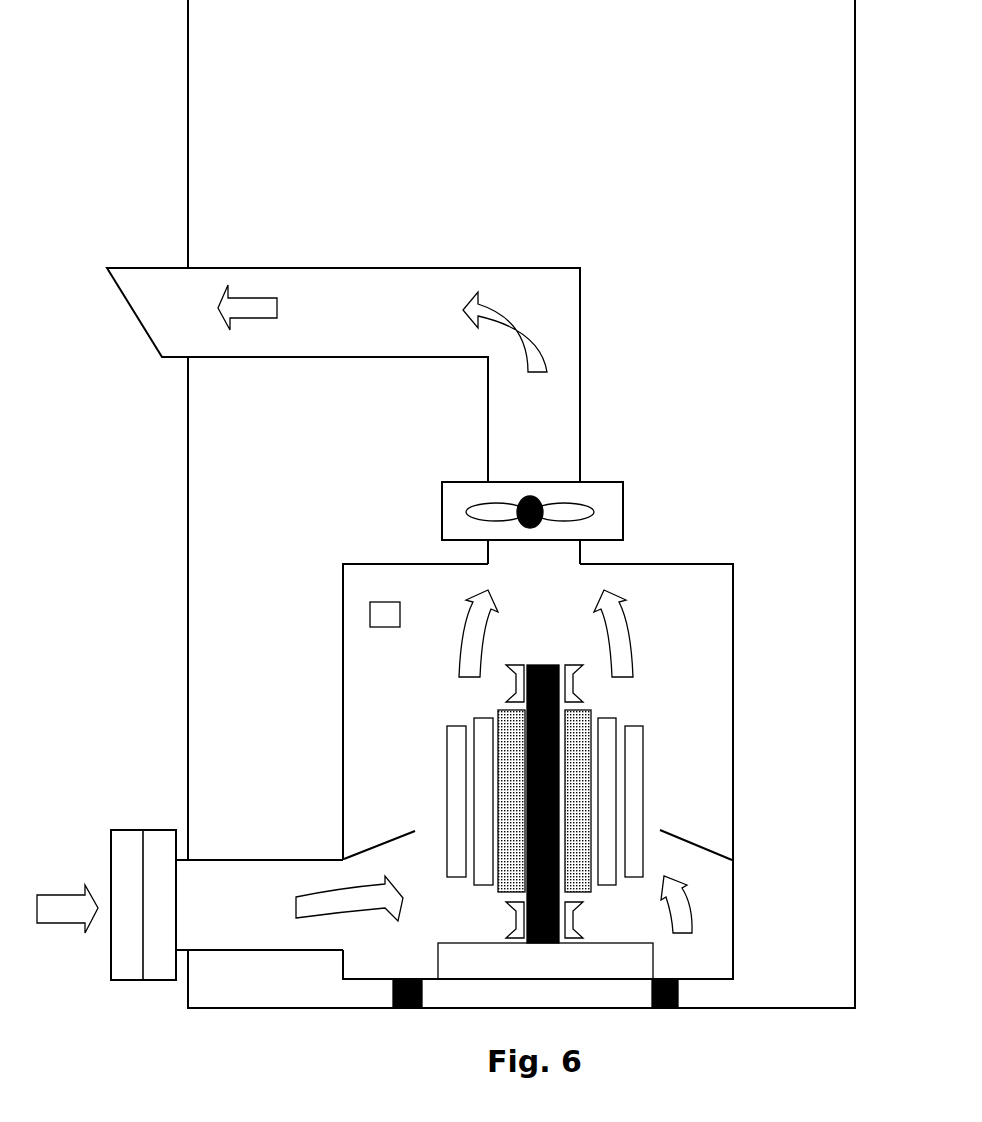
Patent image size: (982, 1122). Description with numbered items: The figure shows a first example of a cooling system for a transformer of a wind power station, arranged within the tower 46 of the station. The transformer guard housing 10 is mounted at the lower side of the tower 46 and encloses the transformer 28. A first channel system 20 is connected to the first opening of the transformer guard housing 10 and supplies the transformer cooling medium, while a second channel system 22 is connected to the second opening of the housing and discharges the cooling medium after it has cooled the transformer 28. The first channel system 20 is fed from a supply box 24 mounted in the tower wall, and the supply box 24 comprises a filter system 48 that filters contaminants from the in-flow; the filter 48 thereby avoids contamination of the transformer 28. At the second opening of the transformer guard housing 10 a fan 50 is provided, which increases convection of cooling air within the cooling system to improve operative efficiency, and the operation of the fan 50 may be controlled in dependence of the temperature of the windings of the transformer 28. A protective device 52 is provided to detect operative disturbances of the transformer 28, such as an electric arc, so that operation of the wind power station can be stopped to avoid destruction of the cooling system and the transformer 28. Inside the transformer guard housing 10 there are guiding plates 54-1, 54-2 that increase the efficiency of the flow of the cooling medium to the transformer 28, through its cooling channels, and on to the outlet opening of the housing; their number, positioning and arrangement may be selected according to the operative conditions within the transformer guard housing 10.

The transformer guard housing 10 is at (699, 560).
The first channel system 20 is at (215, 860).
The second channel system 22 is at (440, 268).
The supply box 24 is at (123, 830).
The transformer 28 is at (650, 705).
The tower 46 is at (188, 50).
The filter system 48 is at (120, 980).
The fan 50 is at (442, 504).
The protective device 52 is at (370, 605).
The guiding plate 54-1 is at (355, 851).
The guiding plate 54-2 is at (668, 830).